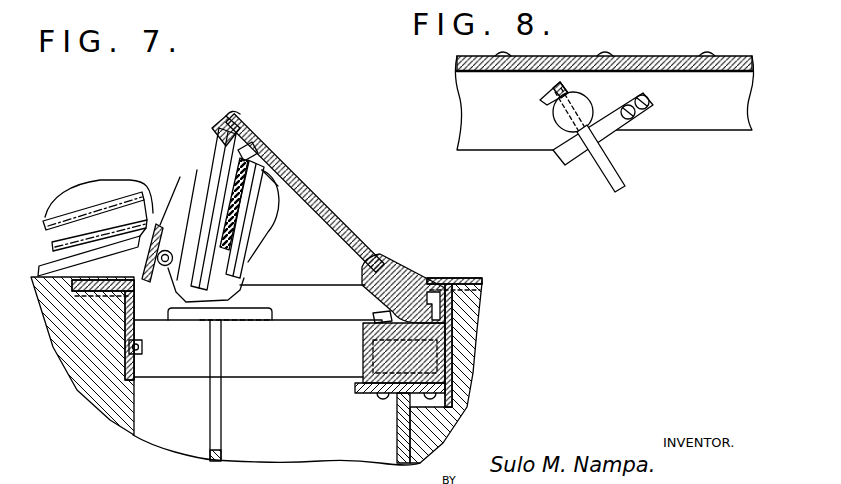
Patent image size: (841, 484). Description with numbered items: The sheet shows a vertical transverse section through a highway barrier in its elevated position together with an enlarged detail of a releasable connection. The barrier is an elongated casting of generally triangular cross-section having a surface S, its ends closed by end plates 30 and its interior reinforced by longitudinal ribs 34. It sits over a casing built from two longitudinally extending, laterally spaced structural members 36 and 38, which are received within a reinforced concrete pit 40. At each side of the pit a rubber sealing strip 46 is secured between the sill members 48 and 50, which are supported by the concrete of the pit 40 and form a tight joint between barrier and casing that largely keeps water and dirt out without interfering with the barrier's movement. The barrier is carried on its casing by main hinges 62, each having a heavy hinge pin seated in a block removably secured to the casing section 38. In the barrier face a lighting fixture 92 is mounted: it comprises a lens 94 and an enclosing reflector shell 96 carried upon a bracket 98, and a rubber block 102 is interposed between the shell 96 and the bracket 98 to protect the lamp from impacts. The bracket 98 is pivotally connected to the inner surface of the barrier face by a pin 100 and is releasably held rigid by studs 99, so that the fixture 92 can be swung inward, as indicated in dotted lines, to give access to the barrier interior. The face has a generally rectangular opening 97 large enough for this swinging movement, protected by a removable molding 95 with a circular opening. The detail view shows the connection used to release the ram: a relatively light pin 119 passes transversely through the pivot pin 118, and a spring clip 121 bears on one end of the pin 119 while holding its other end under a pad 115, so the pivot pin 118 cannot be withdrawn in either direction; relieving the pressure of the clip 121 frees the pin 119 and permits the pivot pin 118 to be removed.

In FIG. 7, the end plate 30 is at (298, 276).
In FIG. 7, the longitudinal rib 34 is at (378, 252).
In FIG. 7, the longitudinally extending member 36 is at (224, 460).
In FIG. 7, the longitudinally extending member 38 is at (404, 437).
In FIG. 7, the pit 40 is at (78, 390).
In FIG. 7, the sealing strip 46 is at (121, 331).
In FIG. 7, the sill member 48 is at (501, 272).
In FIG. 7, the sill member 50 is at (126, 337).
In FIG. 7, the main hinge 62 is at (390, 303).
In FIG. 7, the lighting fixture 92 is at (279, 187).
In FIG. 7, the lens 94 is at (212, 160).
In FIG. 7, the molding 95 is at (220, 128).
In FIG. 7, the reflector shell 96 is at (248, 140).
In FIG. 7, the opening 97 is at (230, 122).
In FIG. 7, the bracket 98 is at (242, 276).
In FIG. 7, the stud 99 is at (262, 163).
In FIG. 7, the pin 100 is at (158, 259).
In FIG. 7, the rubber block 102 is at (245, 222).
In FIG. 8, the pad 115 is at (543, 93).
In FIG. 8, the pivot pin 118 is at (583, 102).
In FIG. 8, the pin 119 is at (605, 157).
In FIG. 8, the spring clip 121 is at (605, 133).
In FIG. 7, the surface S is at (331, 216).
In FIG. 8, the surface S is at (664, 63).